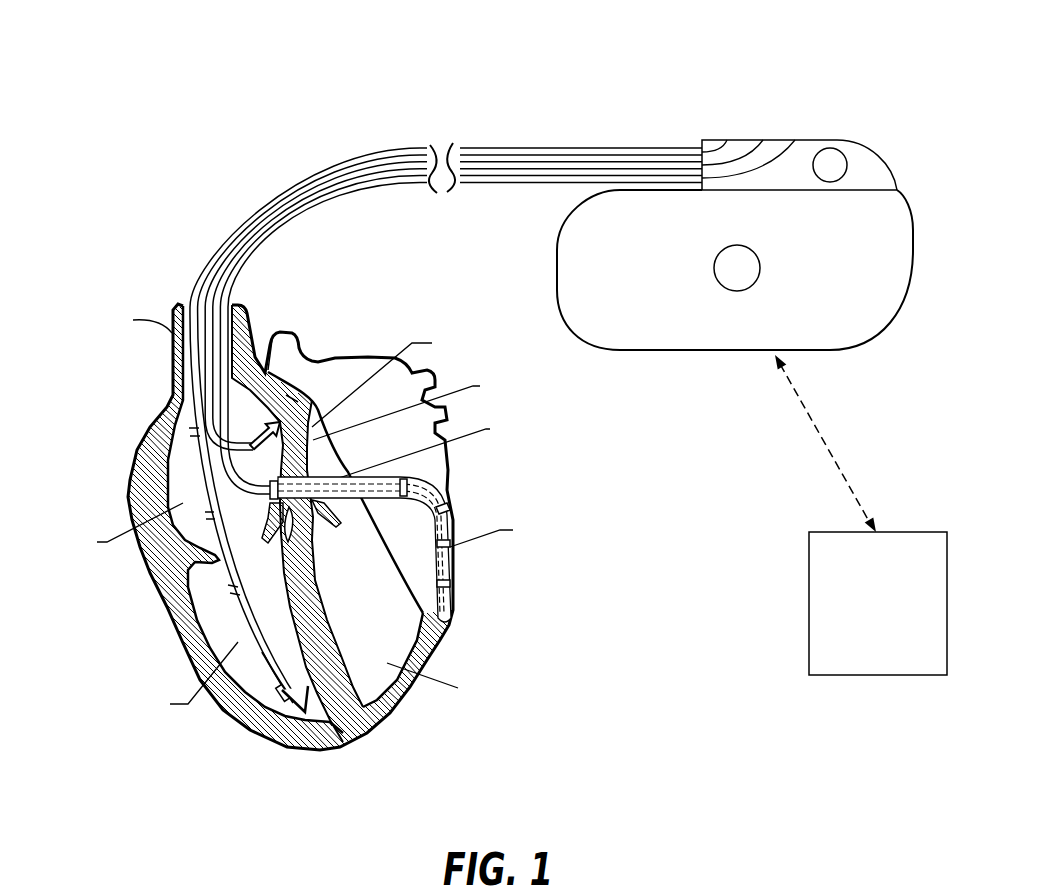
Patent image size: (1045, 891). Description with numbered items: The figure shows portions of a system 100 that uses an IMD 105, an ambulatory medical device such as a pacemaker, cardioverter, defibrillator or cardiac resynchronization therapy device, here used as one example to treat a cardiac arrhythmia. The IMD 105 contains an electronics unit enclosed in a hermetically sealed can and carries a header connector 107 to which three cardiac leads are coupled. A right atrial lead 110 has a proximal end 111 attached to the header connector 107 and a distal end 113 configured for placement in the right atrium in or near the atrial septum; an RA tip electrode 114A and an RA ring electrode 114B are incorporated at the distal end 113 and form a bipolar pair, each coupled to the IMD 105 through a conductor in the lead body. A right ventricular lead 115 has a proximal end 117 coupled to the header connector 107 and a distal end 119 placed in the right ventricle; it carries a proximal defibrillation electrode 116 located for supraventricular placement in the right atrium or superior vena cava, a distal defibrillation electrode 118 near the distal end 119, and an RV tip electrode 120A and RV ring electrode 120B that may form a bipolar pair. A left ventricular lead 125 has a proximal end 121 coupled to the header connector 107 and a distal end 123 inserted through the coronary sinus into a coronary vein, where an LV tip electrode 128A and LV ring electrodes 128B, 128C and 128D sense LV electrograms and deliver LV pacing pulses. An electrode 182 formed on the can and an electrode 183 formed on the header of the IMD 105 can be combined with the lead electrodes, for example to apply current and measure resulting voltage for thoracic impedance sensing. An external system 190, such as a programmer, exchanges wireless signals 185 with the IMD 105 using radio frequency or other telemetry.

The system 100 is at (107, 50).
The IMD 105 is at (863, 348).
The header connector 107 is at (880, 152).
The right atrial lead 110 is at (480, 187).
The proximal end 111 is at (795, 140).
The distal end 113 is at (279, 424).
The RA tip electrode 114A is at (292, 400).
The RA ring electrode 114B is at (285, 332).
The right ventricular lead 115 is at (355, 160).
The proximal defibrillation electrode 116 is at (205, 458).
The proximal end 117 is at (727, 140).
The distal defibrillation electrode 118 is at (240, 613).
The distal end 119 is at (292, 713).
The RV tip electrode 120A is at (338, 749).
The RV ring electrode 120B is at (280, 690).
The proximal end 121 is at (763, 140).
The distal end 123 is at (448, 618).
The left ventricular lead 125 is at (297, 197).
The LV tip electrode 128A is at (451, 587).
The LV ring electrode 128B is at (453, 561).
The LV ring electrode 128C is at (451, 514).
The LV ring electrode 128D is at (450, 487).
The electrode 182 is at (761, 266).
The electrode 183 is at (829, 147).
The wireless signals 185 is at (825, 440).
The external system 190 is at (877, 676).